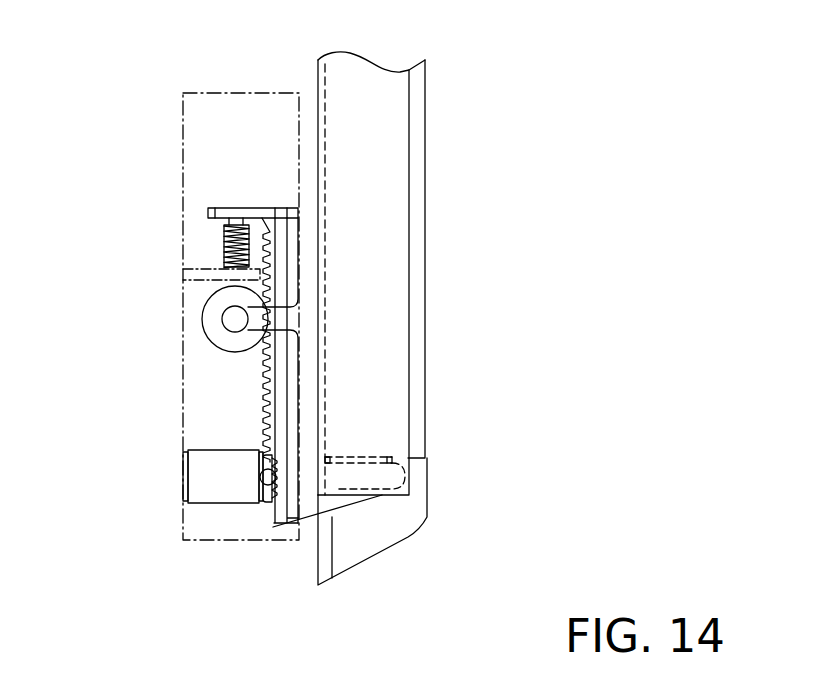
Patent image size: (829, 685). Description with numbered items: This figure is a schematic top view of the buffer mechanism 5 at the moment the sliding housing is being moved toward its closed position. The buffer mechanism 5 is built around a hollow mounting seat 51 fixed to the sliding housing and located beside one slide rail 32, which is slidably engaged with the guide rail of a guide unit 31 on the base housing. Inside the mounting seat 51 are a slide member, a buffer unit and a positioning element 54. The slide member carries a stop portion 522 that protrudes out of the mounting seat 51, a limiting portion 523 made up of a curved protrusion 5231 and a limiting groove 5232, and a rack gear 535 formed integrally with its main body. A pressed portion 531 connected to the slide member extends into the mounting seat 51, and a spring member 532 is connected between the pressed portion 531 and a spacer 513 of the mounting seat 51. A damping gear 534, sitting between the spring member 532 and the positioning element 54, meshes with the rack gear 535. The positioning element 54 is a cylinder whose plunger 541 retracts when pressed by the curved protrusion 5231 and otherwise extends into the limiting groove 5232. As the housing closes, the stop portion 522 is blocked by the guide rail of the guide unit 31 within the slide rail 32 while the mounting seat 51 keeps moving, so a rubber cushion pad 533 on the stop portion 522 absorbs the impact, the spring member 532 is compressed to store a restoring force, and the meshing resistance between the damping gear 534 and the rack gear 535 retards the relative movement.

The buffer mechanism 5 is at (157, 93).
The mounting seat 51 is at (240, 118).
The spacer 513 is at (200, 273).
The guide unit 31 is at (415, 218).
The slide rail 32 is at (375, 148).
The pressed portion 531 is at (230, 213).
The spring member 532 is at (235, 240).
The cushion pad 533 is at (360, 453).
The damping gear 534 is at (235, 320).
The rack gear 535 is at (263, 377).
The positioning element 54 is at (207, 482).
The plunger 541 is at (267, 477).
The stop portion 522 is at (333, 502).
The limiting portion 523 is at (280, 615).
The curved protrusion 5231 is at (265, 508).
The limiting groove 5232 is at (270, 465).